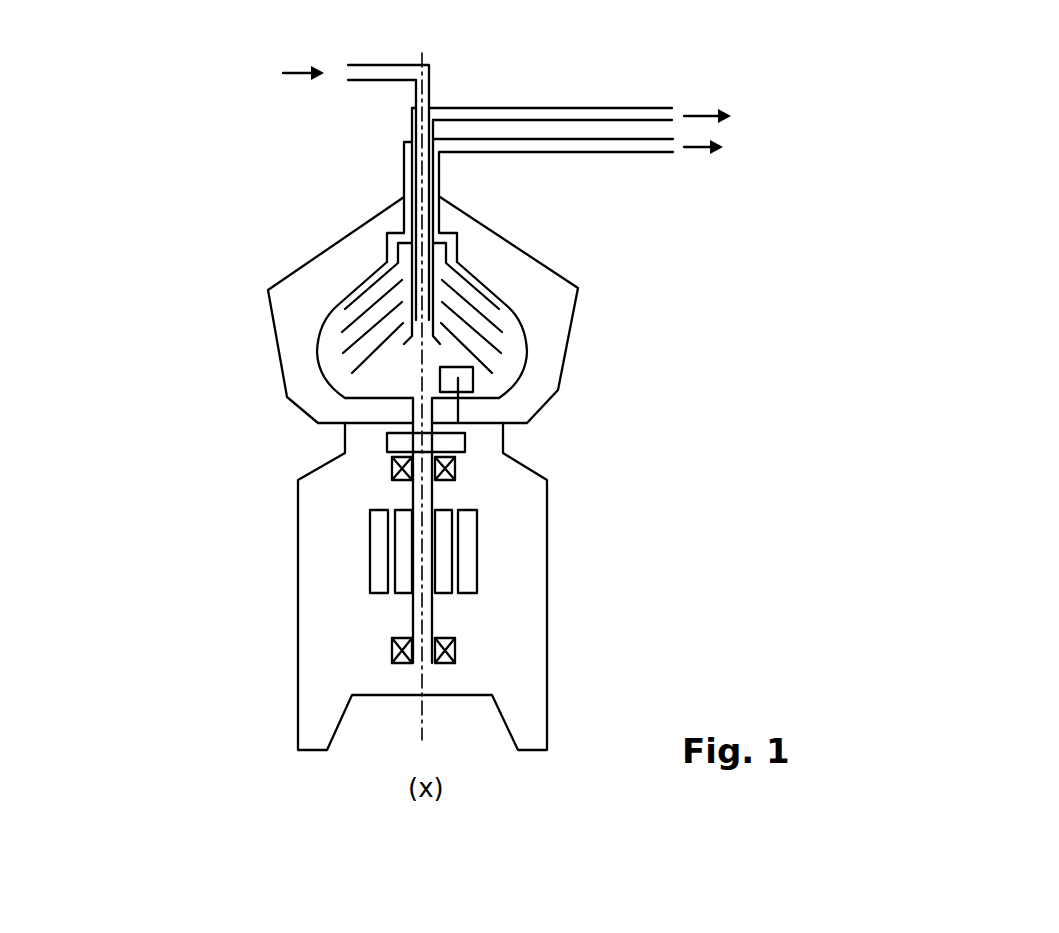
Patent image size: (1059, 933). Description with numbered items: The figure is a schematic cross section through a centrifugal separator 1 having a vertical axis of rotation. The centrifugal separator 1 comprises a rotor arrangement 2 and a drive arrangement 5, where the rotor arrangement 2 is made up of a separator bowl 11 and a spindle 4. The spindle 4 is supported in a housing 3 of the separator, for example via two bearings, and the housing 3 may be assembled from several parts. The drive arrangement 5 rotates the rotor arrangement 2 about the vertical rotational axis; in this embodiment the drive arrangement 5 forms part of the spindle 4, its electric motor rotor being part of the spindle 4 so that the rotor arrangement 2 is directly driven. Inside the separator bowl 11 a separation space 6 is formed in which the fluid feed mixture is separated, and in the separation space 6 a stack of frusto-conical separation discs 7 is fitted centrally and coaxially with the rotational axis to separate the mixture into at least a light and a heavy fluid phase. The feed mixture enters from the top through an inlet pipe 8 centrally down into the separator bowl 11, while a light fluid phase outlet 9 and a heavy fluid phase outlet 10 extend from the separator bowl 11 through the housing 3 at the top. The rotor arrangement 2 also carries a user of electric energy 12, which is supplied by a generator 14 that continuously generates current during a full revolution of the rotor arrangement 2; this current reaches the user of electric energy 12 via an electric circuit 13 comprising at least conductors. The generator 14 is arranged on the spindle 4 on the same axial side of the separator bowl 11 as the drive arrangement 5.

The centrifugal separator 1 is at (230, 268).
The rotor arrangement 2 is at (338, 297).
The housing 3 is at (298, 505).
The spindle 4 is at (402, 408).
The drive arrangement 5 is at (380, 553).
The separation space 6 is at (507, 353).
The stack of frusto-conical separation discs 7 is at (490, 293).
The inlet pipe 8 is at (387, 65).
The light fluid phase outlet 9 is at (412, 125).
The heavy fluid phase outlet 10 is at (404, 172).
The separator bowl 11 is at (315, 350).
The user of electric energy 12 is at (460, 393).
The electric circuit 13 is at (458, 412).
The generator 14 is at (450, 443).